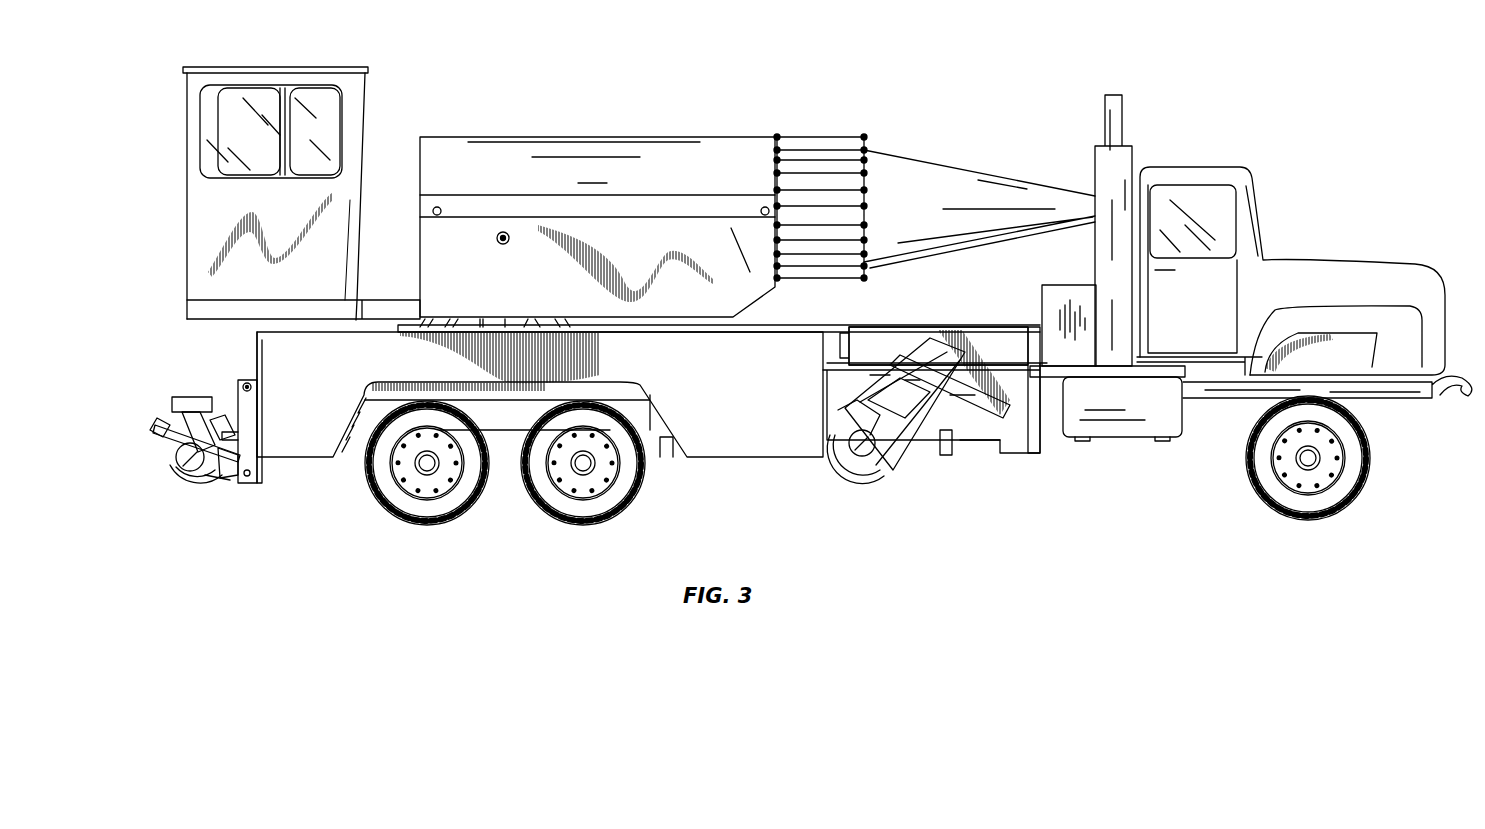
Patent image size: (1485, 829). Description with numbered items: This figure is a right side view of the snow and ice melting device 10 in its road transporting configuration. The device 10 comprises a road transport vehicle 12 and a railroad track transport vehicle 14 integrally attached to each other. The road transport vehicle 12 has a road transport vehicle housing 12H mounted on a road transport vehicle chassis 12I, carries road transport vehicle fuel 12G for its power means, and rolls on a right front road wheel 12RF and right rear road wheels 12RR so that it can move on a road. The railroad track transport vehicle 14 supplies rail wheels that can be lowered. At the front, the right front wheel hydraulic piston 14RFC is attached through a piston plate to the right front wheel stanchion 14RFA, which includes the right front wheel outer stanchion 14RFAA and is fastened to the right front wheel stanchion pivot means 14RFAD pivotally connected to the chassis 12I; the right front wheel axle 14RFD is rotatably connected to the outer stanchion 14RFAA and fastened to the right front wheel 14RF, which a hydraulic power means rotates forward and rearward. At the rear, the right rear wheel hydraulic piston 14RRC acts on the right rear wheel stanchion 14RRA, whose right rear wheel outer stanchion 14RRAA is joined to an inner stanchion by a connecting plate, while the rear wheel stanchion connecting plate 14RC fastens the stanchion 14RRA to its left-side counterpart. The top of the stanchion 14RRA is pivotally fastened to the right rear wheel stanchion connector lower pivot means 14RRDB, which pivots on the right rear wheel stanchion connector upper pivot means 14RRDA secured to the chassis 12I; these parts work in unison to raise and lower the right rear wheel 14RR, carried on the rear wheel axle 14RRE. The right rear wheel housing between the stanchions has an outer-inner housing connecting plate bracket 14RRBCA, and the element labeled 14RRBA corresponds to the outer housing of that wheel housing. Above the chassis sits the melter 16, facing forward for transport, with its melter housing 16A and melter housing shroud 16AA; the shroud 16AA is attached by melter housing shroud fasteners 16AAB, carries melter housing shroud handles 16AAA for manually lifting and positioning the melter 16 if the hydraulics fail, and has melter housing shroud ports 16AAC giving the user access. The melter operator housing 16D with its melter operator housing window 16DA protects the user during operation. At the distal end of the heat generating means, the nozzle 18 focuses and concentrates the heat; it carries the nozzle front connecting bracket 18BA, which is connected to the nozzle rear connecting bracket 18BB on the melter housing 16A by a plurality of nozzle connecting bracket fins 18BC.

The snow and ice melting device 10 is at (734, 52).
The road transport vehicle 12 is at (1200, 157).
The road transport vehicle housing 12H is at (1213, 313).
The road transport vehicle chassis 12I is at (257, 340).
The road transport vehicle fuel 12G is at (1108, 438).
The road transport vehicle right front road wheel 12RF is at (1372, 460).
The road transport vehicle right rear road wheel 12RR is at (540, 503).
The railroad track transport vehicle 14 is at (234, 505).
The railroad track transport vehicle right rear wheel 14RR is at (160, 468).
The railroad track transport vehicle right rear wheel stanchion 14RRA is at (214, 490).
The railroad track transport vehicle right rear wheel outer stanchion 14RRAA is at (222, 475).
The rear bracket arm 14RRBA is at (192, 420).
The railroad track transport vehicle rear wheel stanchion connecting plate 14RC is at (153, 437).
The railroad track transport vehicle right rear wheel outer-inner housing connecting 14RRBCA is at (215, 425).
The railroad track transport vehicle right rear wheel stanchion connector upper pivo 14RRDA is at (243, 395).
The railroad track transport vehicle right rear wheel hydraulic piston 14RRC is at (240, 407).
The railroad track transport vehicle rear wheel axle 14RRE is at (224, 437).
The railroad track transport vehicle right rear wheel stanchion connector lower pivo 14RRDB is at (245, 445).
The railroad track transport vehicle right front wheel 14RF is at (853, 476).
The railroad track transport vehicle right front wheel axle 14RFD is at (837, 465).
The railroad track transport vehicle right front wheel outer stanchion 14RFAA is at (882, 458).
The railroad track transport vehicle right front wheel stanchion 14RFA is at (905, 461).
The railroad track transport vehicle right front wheel hydraulic piston 14RFC is at (953, 430).
The railroad track transport vehicle right front wheel stanchion pivot means 14RFAD is at (942, 362).
The melter 16 is at (536, 134).
The melter operator housing 16D is at (291, 66).
The melter operator housing window 16DA is at (327, 104).
The melter housing 16A is at (623, 136).
The melter housing shroud 16AA is at (644, 251).
The melter housing shroud handles 16AAA is at (743, 265).
The melter housing shroud fasteners 16AAB is at (762, 204).
The melter housing shroud ports 16AAC is at (503, 244).
The nozzle 18 is at (932, 219).
The nozzle front connecting bracket 18BA is at (866, 118).
The nozzle rear connecting bracket 18BB is at (778, 135).
The nozzle connecting bracket fins 18BC is at (814, 160).